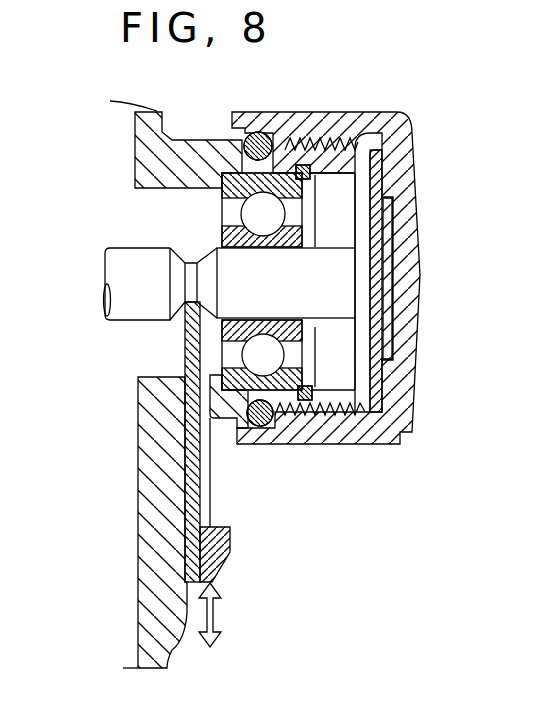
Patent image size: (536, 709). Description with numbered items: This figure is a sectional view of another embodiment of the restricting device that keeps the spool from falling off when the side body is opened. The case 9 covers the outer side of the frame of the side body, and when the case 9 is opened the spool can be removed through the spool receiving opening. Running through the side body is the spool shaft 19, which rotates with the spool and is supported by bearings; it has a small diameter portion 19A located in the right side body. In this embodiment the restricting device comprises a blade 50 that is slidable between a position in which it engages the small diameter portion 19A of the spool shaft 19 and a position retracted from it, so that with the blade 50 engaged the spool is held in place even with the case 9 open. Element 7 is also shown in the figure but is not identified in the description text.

The housing cap 7 is at (419, 286).
The case 9 is at (192, 147).
The spool shaft 19 is at (122, 257).
The small diameter portion 19A is at (192, 272).
The blade 50 is at (198, 487).